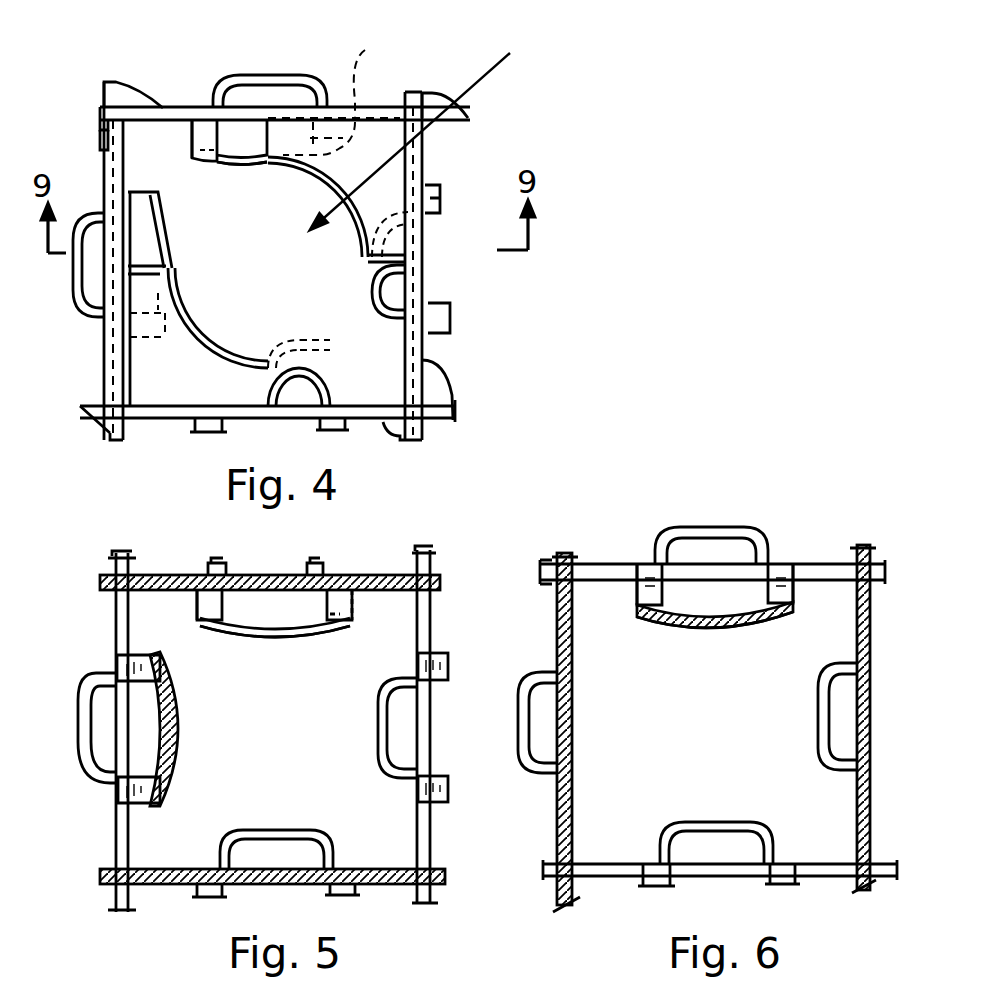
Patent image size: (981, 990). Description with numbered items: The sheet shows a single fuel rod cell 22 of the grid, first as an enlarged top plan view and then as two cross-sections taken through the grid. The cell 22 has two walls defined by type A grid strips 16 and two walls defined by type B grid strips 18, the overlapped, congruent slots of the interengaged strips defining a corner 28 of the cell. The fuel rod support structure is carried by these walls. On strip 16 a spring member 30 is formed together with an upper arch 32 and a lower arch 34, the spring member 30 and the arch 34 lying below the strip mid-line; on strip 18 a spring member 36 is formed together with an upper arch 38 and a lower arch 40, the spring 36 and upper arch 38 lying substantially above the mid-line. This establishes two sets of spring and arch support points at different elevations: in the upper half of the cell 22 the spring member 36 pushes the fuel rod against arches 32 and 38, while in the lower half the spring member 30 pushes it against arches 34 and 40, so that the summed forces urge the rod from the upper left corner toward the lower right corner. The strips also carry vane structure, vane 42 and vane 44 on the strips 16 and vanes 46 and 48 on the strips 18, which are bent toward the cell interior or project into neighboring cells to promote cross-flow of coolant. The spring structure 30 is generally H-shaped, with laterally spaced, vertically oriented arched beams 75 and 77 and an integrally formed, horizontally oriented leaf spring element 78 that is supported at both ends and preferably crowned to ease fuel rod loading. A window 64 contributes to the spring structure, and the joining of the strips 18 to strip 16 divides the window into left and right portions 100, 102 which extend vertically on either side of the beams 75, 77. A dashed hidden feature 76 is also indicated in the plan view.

In FIG. 4, the type A grid strip 16 is at (258, 92).
In FIG. 4, the type B grid strip 18 is at (100, 338).
In FIG. 4, the cell 22 is at (427, 131).
In FIG. 4, the corner 28 is at (118, 407).
In FIG. 5, the corner 28 is at (118, 870).
In FIG. 6, the corner 28 is at (553, 866).
In FIG. 4, the spring member 30 is at (232, 176).
In FIG. 5, the spring member 30 is at (275, 652).
In FIG. 6, the spring member 30 is at (707, 642).
In FIG. 4, the upper arch 32 is at (250, 78).
In FIG. 5, the lower arch 34 is at (318, 566).
In FIG. 6, the lower arch 34 is at (722, 527).
In FIG. 4, the spring member 36 is at (176, 240).
In FIG. 4, the upper arch 38 is at (82, 220).
In FIG. 5, the lower arch 40 is at (110, 684).
In FIG. 6, the lower arch 40 is at (520, 703).
In FIG. 4, the vane 42 is at (388, 184).
In FIG. 4, the vane 44 is at (440, 96).
In FIG. 4, the vane 46 is at (101, 143).
In FIG. 4, the vane 48 is at (140, 92).
In FIG. 5, the window 64 is at (128, 844).
In FIG. 4, the beam 75 is at (194, 150).
In FIG. 5, the beam 75 is at (196, 605).
In FIG. 6, the beam 75 is at (636, 596).
In FIG. 4, the hidden bracket 76 is at (334, 97).
In FIG. 5, the beam 77 is at (354, 598).
In FIG. 6, the beam 77 is at (797, 598).
In FIG. 4, the spring element 78 is at (251, 168).
In FIG. 5, the spring element 78 is at (298, 636).
In FIG. 6, the spring element 78 is at (742, 624).
In FIG. 6, the left portion of window 100 is at (592, 564).
In FIG. 6, the right portion of window 102 is at (553, 556).